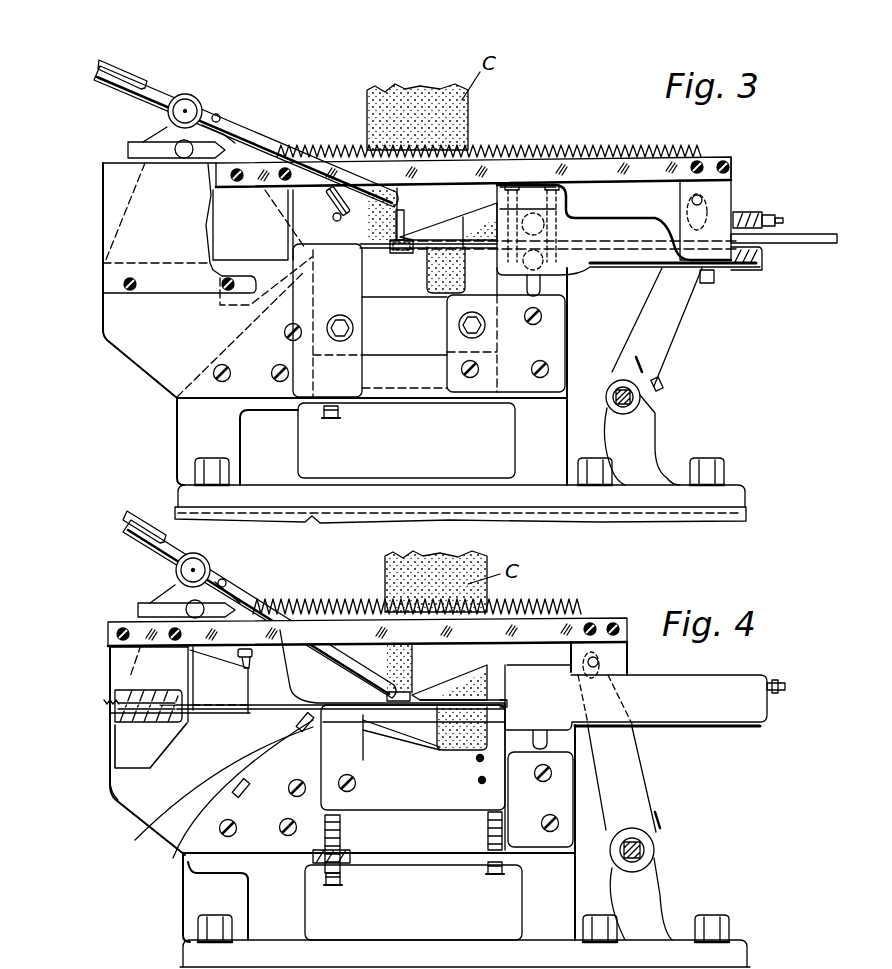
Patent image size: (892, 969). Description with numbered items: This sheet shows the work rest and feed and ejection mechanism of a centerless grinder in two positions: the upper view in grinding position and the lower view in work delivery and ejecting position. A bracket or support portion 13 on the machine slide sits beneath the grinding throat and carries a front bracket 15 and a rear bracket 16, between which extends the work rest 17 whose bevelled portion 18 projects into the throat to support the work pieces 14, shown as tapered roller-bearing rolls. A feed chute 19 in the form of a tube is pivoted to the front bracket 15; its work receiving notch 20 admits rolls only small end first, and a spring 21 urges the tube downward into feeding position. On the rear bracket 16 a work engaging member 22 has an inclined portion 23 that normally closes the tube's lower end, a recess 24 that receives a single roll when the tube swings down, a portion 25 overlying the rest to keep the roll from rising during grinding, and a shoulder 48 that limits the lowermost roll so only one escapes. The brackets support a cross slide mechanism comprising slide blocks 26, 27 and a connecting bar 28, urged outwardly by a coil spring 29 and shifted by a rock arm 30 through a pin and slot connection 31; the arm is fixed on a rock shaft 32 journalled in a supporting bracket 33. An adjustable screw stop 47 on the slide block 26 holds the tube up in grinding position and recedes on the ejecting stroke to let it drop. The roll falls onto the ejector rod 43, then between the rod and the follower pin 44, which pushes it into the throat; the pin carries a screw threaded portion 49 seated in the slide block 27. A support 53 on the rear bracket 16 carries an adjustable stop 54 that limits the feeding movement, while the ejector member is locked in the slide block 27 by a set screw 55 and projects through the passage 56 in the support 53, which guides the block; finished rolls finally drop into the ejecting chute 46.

In FIG. 3, the bracket or support portion 13 is at (282, 452).
In FIG. 4, the work pieces 14 is at (397, 703).
In FIG. 3, the front bracket 15 is at (162, 138).
In FIG. 4, the front bracket 15 is at (175, 591).
In FIG. 3, the rear bracket 16 is at (560, 283).
In FIG. 3, the work rest 17 is at (418, 342).
In FIG. 4, the work rest 17 is at (437, 800).
In FIG. 3, the bevelled portion 18 is at (430, 268).
In FIG. 4, the bevelled portion 18 is at (420, 780).
In FIG. 3, the feed chute 19 is at (162, 110).
In FIG. 4, the feed chute 19 is at (232, 580).
In FIG. 3, the work receiving notch 20 is at (131, 75).
In FIG. 4, the work receiving notch 20 is at (150, 535).
In FIG. 3, the spring 21 is at (220, 113).
In FIG. 4, the spring 21 is at (224, 581).
In FIG. 3, the work engaging member 22 is at (487, 186).
In FIG. 4, the work engaging member 22 is at (537, 650).
In FIG. 3, the inclined portion 23 is at (403, 215).
In FIG. 3, the recess 24 is at (383, 250).
In FIG. 4, the recess 24 is at (407, 692).
In FIG. 3, the overlying portion 25 is at (448, 221).
In FIG. 4, the overlying portion 25 is at (422, 697).
In FIG. 3, the slide block 26 is at (266, 190).
In FIG. 4, the slide block 26 is at (127, 662).
In FIG. 3, the slide block 27 is at (718, 187).
In FIG. 3, the connecting bar 28 is at (598, 178).
In FIG. 3, the coil spring 29 is at (358, 140).
In FIG. 4, the coil spring 29 is at (417, 606).
In FIG. 3, the rock arm 30 is at (671, 312).
In FIG. 4, the rock arm 30 is at (622, 775).
In FIG. 3, the pin and slot connection 31 is at (712, 205).
In FIG. 4, the pin and slot connection 31 is at (605, 662).
In FIG. 3, the rock shaft 32 is at (640, 393).
In FIG. 4, the rock shaft 32 is at (647, 850).
In FIG. 3, the supporting bracket 33 is at (640, 434).
In FIG. 3, the ejector rod 43 is at (822, 244).
In FIG. 4, the ejector rod 43 is at (185, 855).
In FIG. 4, the follower pin 44 is at (209, 798).
In FIG. 4, the ejecting chute 46 is at (137, 793).
In FIG. 3, the adjustable screw stop 47 is at (330, 188).
In FIG. 4, the adjustable screw stop 47 is at (290, 687).
In FIG. 3, the shoulder 48 is at (413, 246).
In FIG. 4, the shoulder 48 is at (422, 702).
In FIG. 4, the screw threaded portion 49 is at (120, 707).
In FIG. 3, the support 53 is at (622, 225).
In FIG. 3, the adjustable stop 54 is at (767, 225).
In FIG. 3, the set screw 55 is at (716, 281).
In FIG. 3, the passage 56 is at (763, 249).